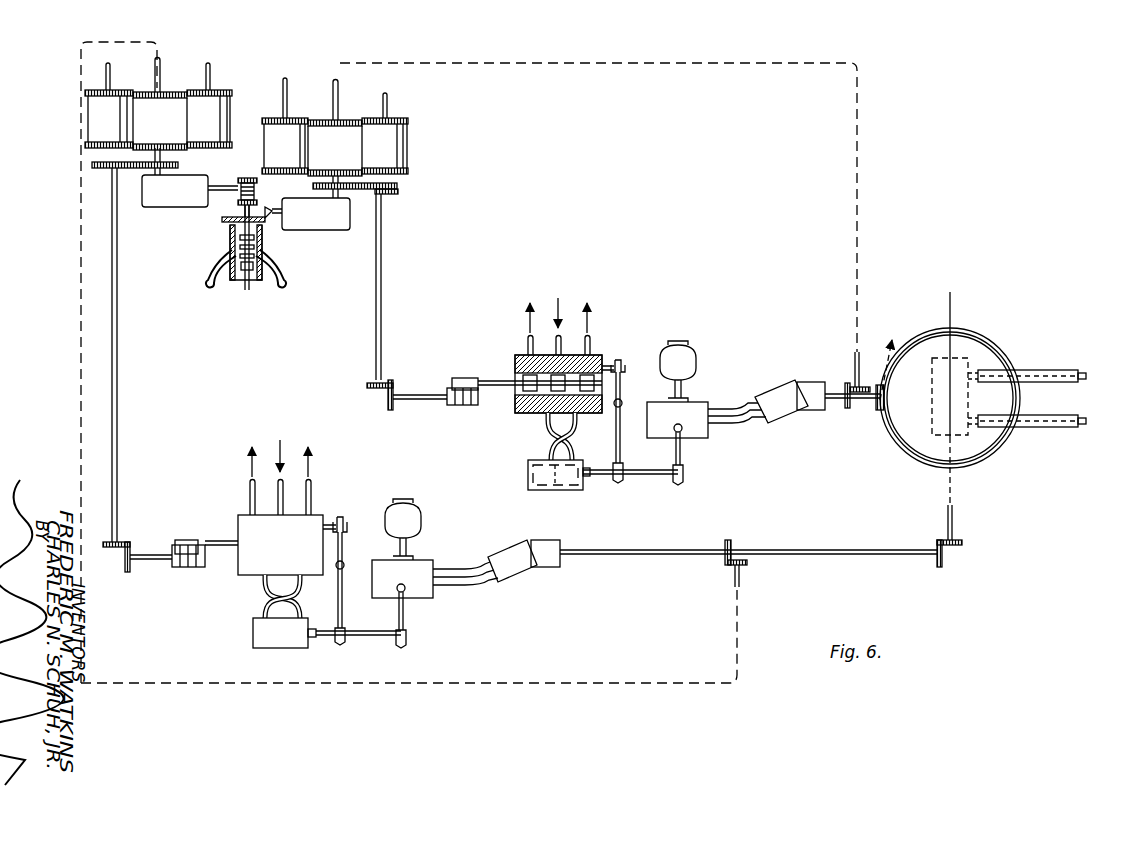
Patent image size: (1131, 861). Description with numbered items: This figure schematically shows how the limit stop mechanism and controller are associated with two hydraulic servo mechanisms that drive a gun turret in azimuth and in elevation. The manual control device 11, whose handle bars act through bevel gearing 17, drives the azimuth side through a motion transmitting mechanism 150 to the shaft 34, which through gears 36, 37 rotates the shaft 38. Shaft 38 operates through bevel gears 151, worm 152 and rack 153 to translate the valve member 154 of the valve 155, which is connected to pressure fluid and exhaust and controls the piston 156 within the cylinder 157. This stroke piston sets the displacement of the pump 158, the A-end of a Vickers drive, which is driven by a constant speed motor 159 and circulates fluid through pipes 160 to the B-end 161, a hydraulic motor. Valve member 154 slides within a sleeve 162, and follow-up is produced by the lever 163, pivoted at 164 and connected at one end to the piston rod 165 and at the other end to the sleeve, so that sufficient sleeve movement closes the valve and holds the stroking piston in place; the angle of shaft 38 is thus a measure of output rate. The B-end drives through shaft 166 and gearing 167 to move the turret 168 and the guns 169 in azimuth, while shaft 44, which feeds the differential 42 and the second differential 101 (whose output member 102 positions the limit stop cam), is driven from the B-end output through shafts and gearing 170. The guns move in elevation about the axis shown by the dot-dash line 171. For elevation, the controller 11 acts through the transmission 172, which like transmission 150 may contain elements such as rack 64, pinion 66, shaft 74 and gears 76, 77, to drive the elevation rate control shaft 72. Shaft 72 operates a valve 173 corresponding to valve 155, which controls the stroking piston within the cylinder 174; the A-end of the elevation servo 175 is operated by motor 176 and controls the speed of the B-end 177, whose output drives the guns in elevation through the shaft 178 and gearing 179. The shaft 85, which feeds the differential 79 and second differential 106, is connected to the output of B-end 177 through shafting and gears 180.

The manual control device 11 is at (198, 272).
The bevel gearing 17 is at (268, 220).
The shaft 34 is at (312, 186).
The gear 36 is at (397, 184).
The gear 37 is at (400, 193).
The shaft 38 is at (381, 280).
The differential 42 is at (400, 145).
The shaft 44 is at (333, 80).
The second circular rack 64 is at (243, 178).
The pinion 66 is at (240, 196).
The elevation rate control shaft 72 is at (117, 365).
The shaft 74 is at (150, 155).
The gear 76 is at (143, 167).
The gear 77 is at (108, 166).
The differential 79 is at (90, 114).
The shaft 85 is at (160, 62).
The second differential 101 is at (270, 142).
The output member 102 is at (283, 78).
The second differential 106 is at (222, 112).
The motion transmitting mechanism 150 is at (330, 216).
The bevel gears 151 is at (370, 387).
The worm 152 is at (463, 408).
The rack 153 is at (470, 362).
The valve member 154 is at (515, 372).
The valve 155 is at (535, 444).
The piston 156 is at (528, 475).
The cylinder 157 is at (578, 490).
The pump 158 is at (700, 432).
The motor 159 is at (695, 362).
The pipes 160 is at (740, 400).
The B-end 161 is at (805, 408).
The sleeve 162 is at (602, 366).
The lever 163 is at (623, 440).
The pivot 164 is at (622, 402).
The piston rod 165 is at (660, 475).
The shaft 166 is at (856, 415).
The gearing 167 is at (894, 357).
The turret 168 is at (975, 450).
The guns 169 is at (1062, 415).
The shafts and gearing 170 is at (857, 180).
The dot-dash line 171 is at (950, 312).
The transmission 172 is at (153, 198).
The valve 173 is at (236, 527).
The cylinder 174 is at (283, 638).
The A-end of the elevation servo 175 is at (425, 585).
The motor 176 is at (415, 525).
The B-end 177 is at (540, 540).
The shaft 178 is at (650, 555).
The gearing 179 is at (960, 548).
The shafting and gears 180 is at (80, 352).